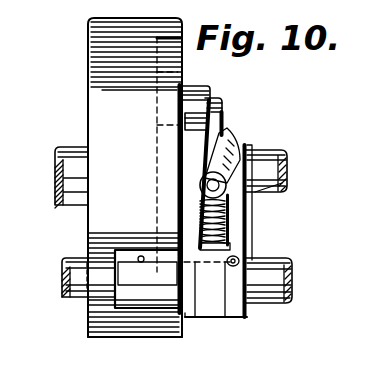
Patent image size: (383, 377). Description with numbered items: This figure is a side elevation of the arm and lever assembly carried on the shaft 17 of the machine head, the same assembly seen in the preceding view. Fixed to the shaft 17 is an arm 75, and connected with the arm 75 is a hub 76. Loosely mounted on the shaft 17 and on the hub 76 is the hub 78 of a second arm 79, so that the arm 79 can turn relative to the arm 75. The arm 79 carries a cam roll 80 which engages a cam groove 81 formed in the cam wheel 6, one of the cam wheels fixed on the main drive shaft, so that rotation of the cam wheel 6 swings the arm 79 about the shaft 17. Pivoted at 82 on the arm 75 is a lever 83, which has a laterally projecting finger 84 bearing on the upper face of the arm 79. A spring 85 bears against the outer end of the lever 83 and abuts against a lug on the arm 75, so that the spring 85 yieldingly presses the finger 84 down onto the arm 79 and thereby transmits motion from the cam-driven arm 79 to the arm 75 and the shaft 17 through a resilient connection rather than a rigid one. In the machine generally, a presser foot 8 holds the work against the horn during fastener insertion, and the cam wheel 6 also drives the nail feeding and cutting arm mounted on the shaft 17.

The cam wheel 6 is at (95, 68).
The presser foot 8 is at (278, 157).
The shaft 17 is at (283, 262).
The arm 75 is at (283, 180).
The hub 76 is at (215, 318).
The hub 78 is at (198, 316).
The arm 79 is at (187, 210).
The cam roll 80 is at (173, 95).
The cam groove 81 is at (157, 190).
The pivot 82 is at (224, 128).
The lever 83 is at (226, 150).
The finger 84 is at (177, 135).
The spring 85 is at (225, 224).